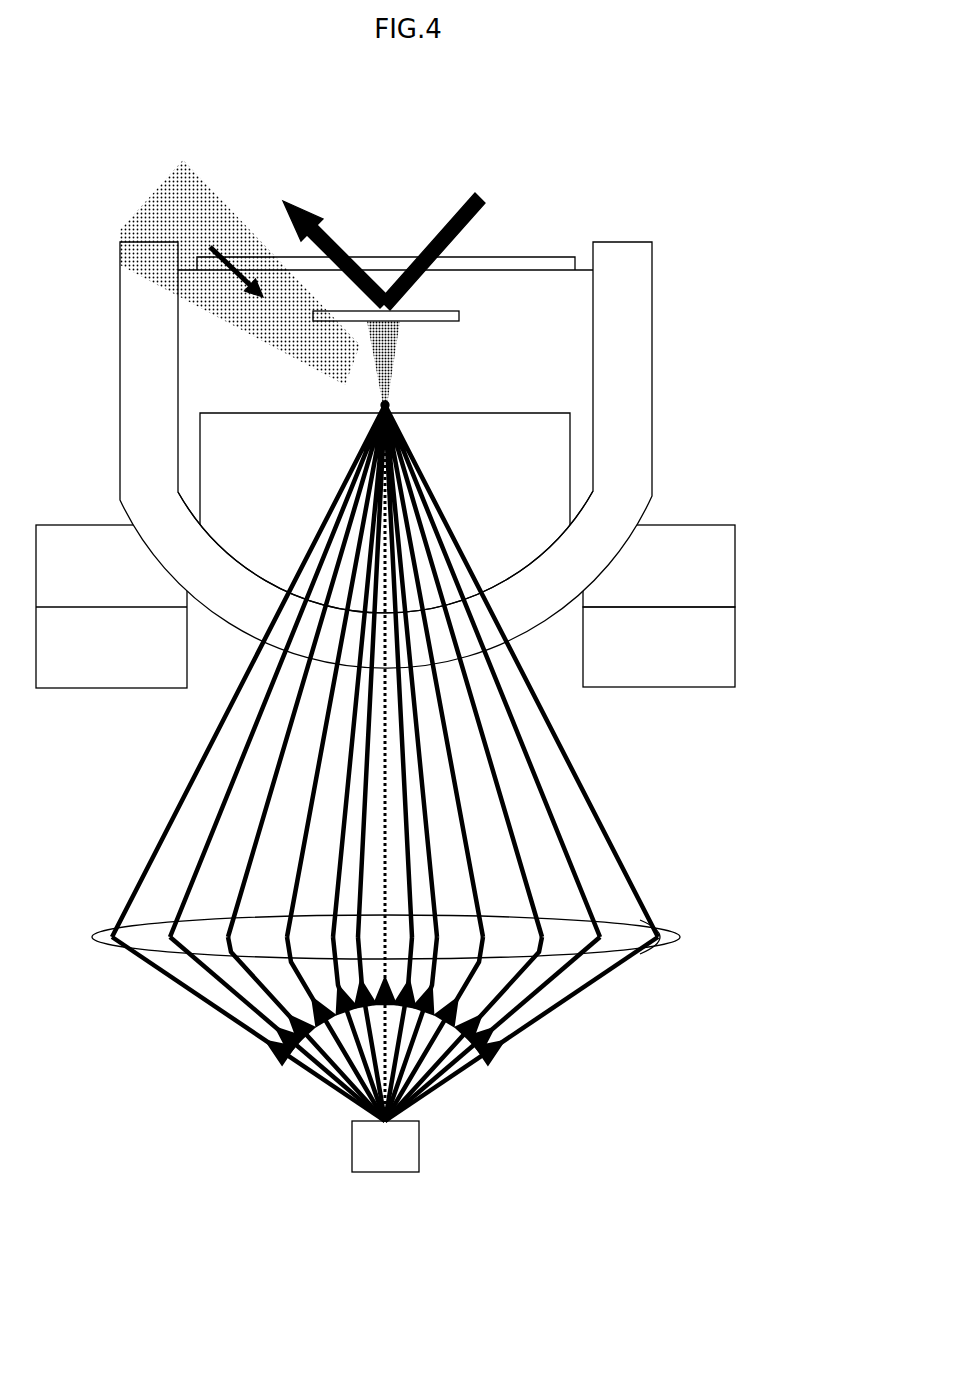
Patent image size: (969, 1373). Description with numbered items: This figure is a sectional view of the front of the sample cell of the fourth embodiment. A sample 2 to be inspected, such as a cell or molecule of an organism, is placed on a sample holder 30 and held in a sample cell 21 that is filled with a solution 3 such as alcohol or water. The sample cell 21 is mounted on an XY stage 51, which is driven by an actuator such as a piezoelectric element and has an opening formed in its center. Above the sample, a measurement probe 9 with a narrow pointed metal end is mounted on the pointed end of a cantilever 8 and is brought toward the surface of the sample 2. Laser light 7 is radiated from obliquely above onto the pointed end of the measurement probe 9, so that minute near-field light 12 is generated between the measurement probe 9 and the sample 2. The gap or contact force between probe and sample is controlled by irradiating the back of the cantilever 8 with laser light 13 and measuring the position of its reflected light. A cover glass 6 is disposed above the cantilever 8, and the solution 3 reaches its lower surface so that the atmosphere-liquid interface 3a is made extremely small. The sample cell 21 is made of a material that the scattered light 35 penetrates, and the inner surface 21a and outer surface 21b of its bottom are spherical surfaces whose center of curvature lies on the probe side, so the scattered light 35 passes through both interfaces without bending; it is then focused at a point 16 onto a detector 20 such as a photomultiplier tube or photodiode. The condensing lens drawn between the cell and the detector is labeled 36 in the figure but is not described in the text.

The sample 2 is at (395, 412).
The solution 3 is at (567, 382).
The interface 3a is at (585, 267).
The cover glass 6 is at (380, 257).
The laser light 7 is at (217, 207).
The cantilever 8 is at (440, 310).
The measurement probe 9 is at (360, 347).
The near-field light 12 is at (367, 398).
The laser light 13 is at (452, 212).
The point 16 is at (373, 1118).
The detector 20 is at (385, 1172).
The sample cell 21 is at (652, 298).
The inner surface 21a is at (560, 647).
The outer surface 21b is at (620, 543).
The sample holder 30 is at (588, 477).
The scattered light 35 is at (635, 878).
The lens 36 is at (665, 947).
The XY stage 51 is at (90, 688).